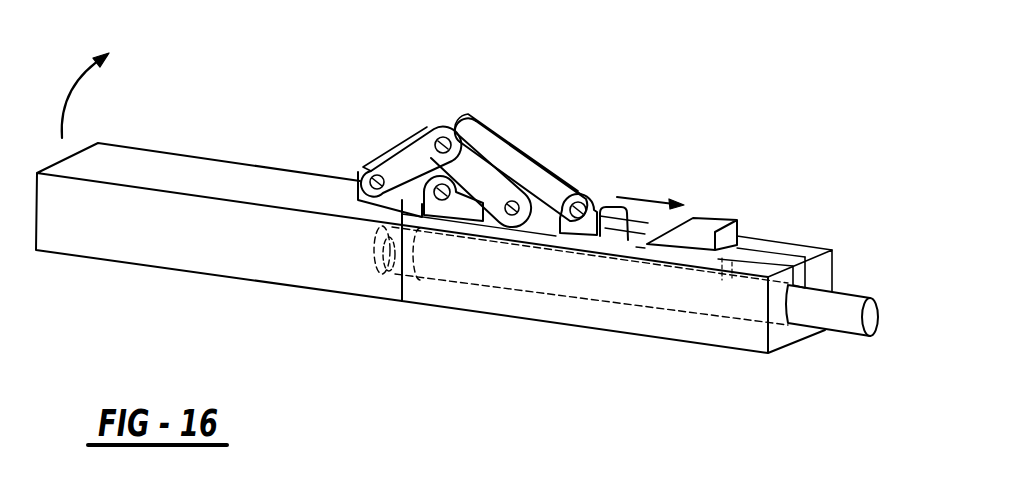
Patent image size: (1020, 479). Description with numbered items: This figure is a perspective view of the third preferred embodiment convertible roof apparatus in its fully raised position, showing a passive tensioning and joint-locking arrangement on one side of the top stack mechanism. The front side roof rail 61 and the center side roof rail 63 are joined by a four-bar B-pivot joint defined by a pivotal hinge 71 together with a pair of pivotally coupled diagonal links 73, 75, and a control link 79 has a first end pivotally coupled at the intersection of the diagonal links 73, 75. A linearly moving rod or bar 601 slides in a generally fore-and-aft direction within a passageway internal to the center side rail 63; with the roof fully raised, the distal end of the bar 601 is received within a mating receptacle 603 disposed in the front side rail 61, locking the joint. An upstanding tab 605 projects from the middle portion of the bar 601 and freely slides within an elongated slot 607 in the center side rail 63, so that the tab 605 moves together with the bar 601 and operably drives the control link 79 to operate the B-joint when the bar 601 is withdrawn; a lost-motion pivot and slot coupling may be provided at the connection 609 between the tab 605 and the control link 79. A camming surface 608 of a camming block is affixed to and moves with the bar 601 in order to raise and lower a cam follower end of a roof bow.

The front side roof rail 61 is at (150, 243).
The center side roof rail 63 is at (712, 333).
The pivotal hinge 71 is at (490, 182).
The diagonal link 73 is at (417, 152).
The diagonal link 75 is at (500, 142).
The control link 79 is at (547, 185).
The bar 601 is at (523, 268).
The mating receptacle 603 is at (398, 275).
The upstanding tab 605 is at (628, 228).
The elongated slot 607 is at (769, 262).
The camming surface 608 is at (707, 222).
The connection 609 is at (574, 222).